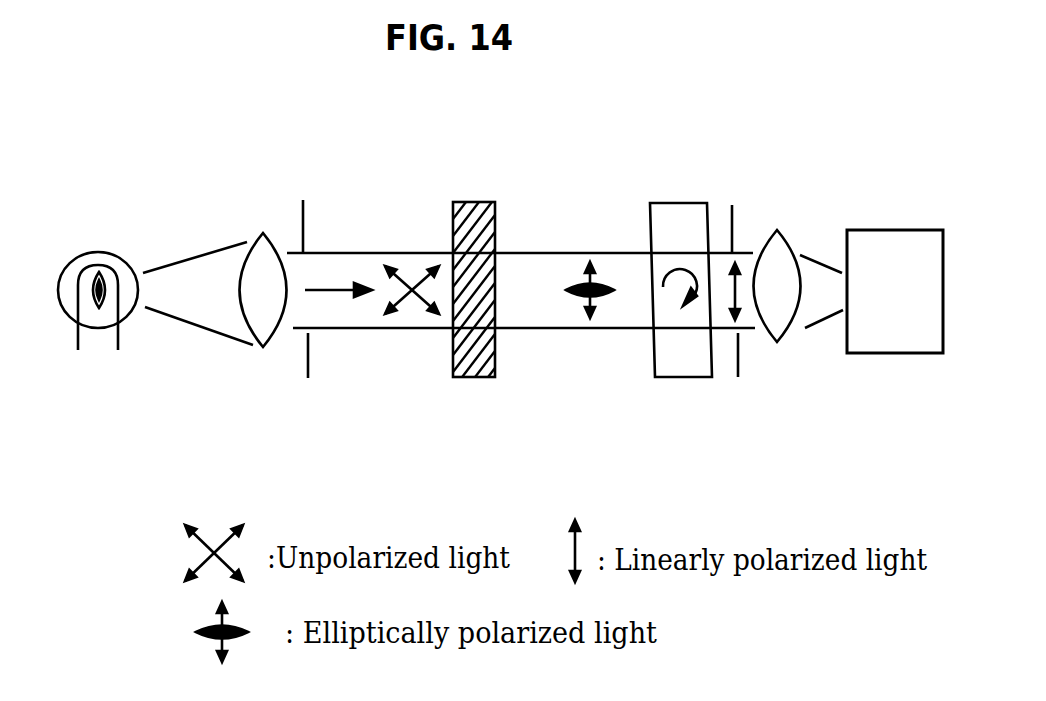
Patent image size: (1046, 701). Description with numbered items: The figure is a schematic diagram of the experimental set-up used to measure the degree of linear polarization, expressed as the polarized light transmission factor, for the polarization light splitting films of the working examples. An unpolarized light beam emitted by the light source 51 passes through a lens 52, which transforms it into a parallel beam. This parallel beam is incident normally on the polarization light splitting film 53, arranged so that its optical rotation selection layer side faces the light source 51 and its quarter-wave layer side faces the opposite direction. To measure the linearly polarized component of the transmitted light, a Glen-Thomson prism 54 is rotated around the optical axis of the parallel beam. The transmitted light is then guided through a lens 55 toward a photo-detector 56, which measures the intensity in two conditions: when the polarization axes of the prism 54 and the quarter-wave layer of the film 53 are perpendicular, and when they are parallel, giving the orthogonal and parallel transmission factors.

The light source 51 is at (128, 320).
The lens 52 is at (270, 347).
The polarization light splitting film 53 is at (470, 377).
The Glen-Thomson prism 54 is at (677, 377).
The lens 55 is at (788, 333).
The photo-detector 56 is at (892, 353).